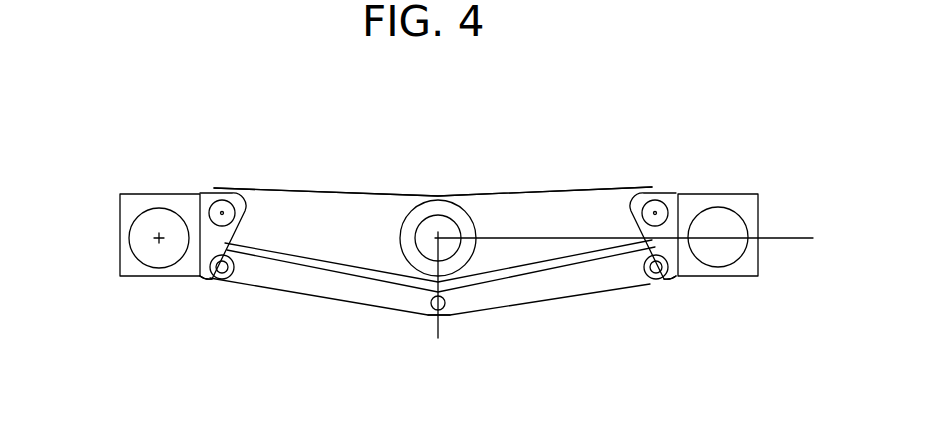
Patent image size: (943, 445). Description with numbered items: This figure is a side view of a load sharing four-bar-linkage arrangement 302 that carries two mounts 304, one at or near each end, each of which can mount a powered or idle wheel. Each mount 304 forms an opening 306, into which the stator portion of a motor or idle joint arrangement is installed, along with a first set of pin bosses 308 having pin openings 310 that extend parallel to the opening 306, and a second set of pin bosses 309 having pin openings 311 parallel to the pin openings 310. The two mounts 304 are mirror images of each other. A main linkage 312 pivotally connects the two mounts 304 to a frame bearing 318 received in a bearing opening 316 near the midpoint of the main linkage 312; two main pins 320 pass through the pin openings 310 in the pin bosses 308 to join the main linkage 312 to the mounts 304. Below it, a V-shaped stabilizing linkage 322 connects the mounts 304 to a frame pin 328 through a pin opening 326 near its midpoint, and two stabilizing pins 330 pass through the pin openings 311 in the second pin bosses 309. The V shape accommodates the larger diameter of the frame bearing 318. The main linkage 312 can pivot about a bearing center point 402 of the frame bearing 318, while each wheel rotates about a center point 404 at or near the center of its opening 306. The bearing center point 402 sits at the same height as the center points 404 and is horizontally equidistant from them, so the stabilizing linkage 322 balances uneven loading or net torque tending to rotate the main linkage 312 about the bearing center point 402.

The four-bar-linkage arrangement 302 is at (620, 103).
The mount 304 is at (142, 202).
The opening 306 is at (138, 243).
The first set of pin bosses 308 is at (207, 193).
The second set of pin bosses 309 is at (210, 277).
The pin opening 310 is at (233, 212).
The pin opening 311 is at (215, 275).
The main linkage 312 is at (497, 207).
The bearing opening 316 is at (463, 210).
The frame bearing 318 is at (410, 223).
The main pin 320 is at (220, 199).
The stabilizing linkage 322 is at (475, 293).
The pin opening 326 is at (430, 303).
The frame pin 328 is at (445, 308).
The stabilizing pin 330 is at (224, 265).
The bearing center point 402 is at (437, 233).
The center point 404 is at (158, 238).